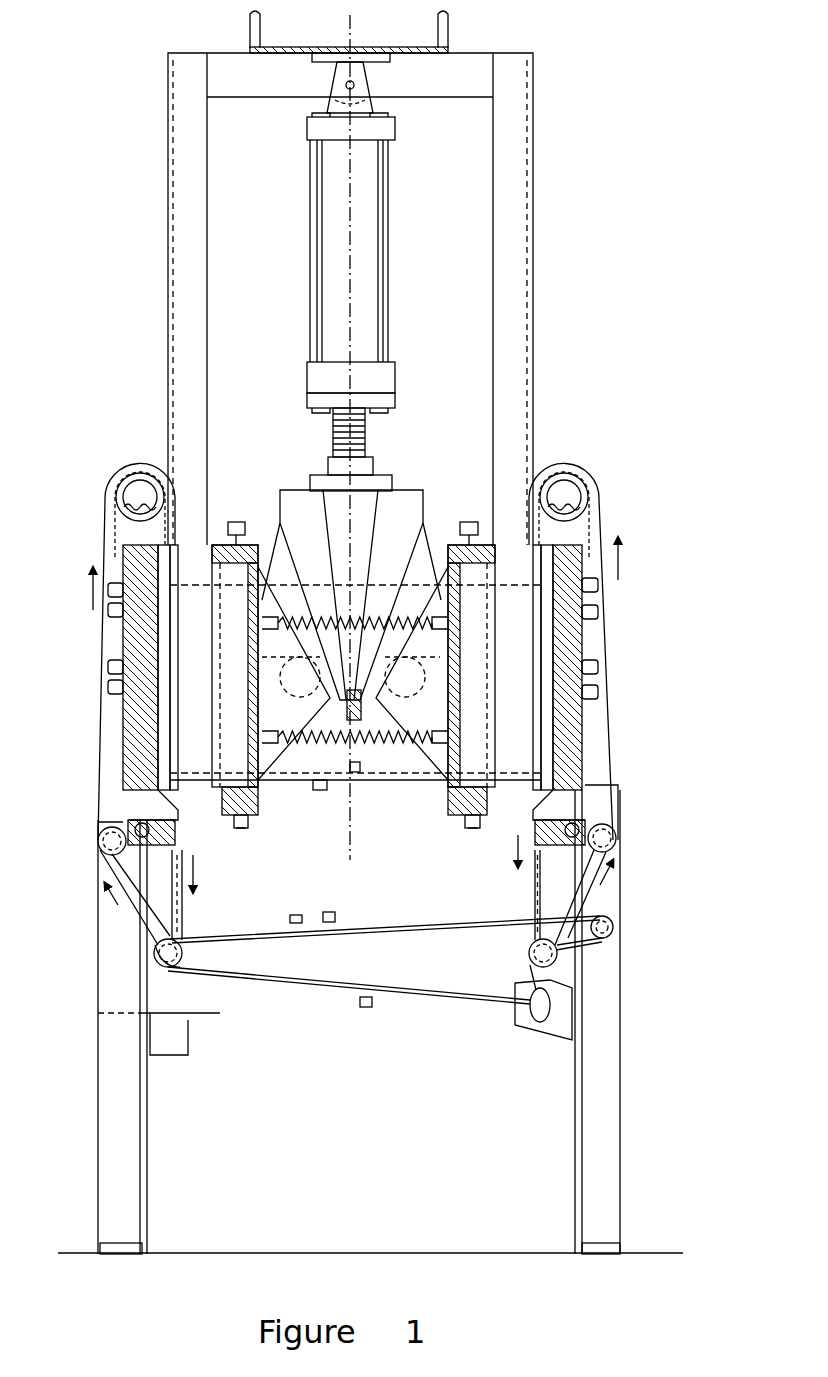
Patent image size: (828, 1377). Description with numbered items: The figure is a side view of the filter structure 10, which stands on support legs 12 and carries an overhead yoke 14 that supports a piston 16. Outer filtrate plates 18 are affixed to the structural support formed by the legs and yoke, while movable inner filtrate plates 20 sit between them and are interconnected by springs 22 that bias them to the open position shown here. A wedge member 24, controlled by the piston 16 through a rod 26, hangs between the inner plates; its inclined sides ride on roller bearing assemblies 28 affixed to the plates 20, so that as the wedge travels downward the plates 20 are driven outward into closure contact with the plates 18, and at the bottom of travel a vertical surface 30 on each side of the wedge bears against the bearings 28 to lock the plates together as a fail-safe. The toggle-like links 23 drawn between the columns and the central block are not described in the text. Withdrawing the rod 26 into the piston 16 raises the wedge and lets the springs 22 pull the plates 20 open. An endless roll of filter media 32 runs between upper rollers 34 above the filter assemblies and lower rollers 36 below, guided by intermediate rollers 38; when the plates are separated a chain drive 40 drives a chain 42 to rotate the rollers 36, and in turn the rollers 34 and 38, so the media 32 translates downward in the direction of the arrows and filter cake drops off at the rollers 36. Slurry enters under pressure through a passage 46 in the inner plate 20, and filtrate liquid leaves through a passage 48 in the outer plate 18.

The filter structure 10 is at (632, 330).
The support legs 12 is at (105, 1120).
The overhead yoke 14 is at (527, 140).
The piston 16 is at (388, 233).
The outer filtrate plates 18 is at (128, 578).
The inner filtrate plates 20 is at (250, 522).
The springs 22 is at (378, 600).
The toggle link 23 is at (400, 620).
The wedge member 24 is at (300, 490).
The rod 26 is at (362, 440).
The roller bearing assemblies 28 is at (313, 689).
The vertical surface 30 is at (280, 505).
The filter media 32 is at (115, 530).
The rollers 34 is at (122, 470).
The lower rollers 36 is at (185, 952).
The intermediate rollers 38 is at (98, 845).
The chain drive 40 is at (532, 1025).
The chain 42 is at (418, 920).
The passage 46 is at (240, 828).
The passage 48 is at (128, 825).